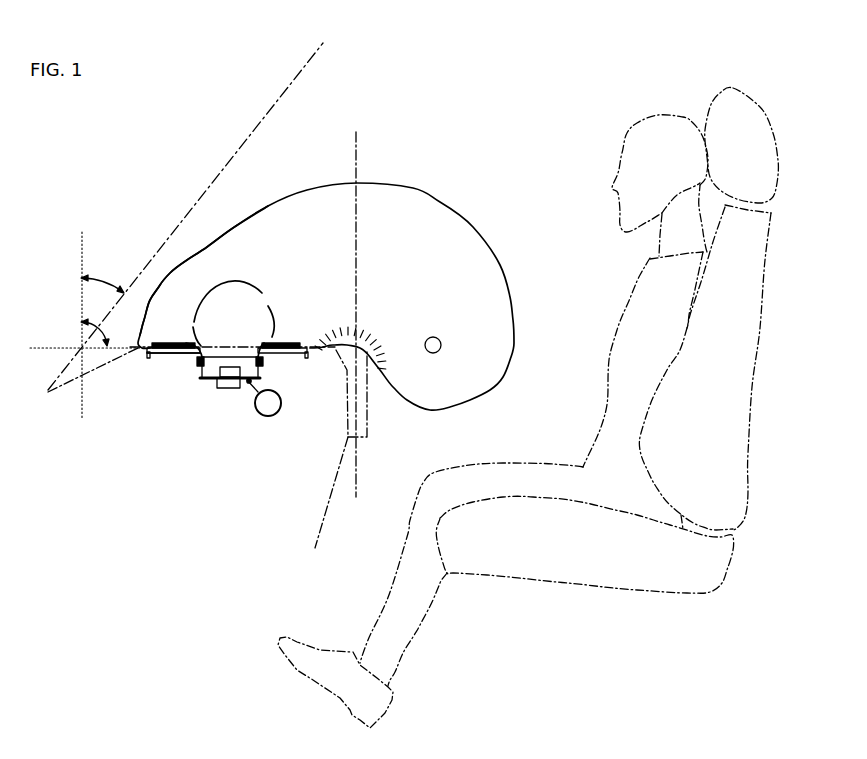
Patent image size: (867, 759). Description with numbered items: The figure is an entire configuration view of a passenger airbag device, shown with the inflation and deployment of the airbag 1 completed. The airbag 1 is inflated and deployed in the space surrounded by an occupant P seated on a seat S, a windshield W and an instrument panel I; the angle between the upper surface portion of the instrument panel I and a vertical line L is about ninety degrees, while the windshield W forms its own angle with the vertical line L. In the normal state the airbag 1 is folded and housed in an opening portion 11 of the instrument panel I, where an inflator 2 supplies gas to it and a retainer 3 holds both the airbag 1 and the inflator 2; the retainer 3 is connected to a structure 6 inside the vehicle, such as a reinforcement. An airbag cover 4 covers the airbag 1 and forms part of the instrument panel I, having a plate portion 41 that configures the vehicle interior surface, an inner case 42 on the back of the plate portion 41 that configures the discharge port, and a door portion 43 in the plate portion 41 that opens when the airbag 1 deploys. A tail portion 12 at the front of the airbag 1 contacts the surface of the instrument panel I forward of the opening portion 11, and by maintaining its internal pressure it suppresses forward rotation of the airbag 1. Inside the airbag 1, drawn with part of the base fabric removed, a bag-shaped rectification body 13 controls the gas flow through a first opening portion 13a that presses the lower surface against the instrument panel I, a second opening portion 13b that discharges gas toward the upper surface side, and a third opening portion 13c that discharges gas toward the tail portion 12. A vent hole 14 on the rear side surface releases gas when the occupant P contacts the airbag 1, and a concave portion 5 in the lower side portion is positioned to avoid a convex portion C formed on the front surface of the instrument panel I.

The airbag 1 is at (404, 186).
The inflator 2 is at (228, 389).
The retainer 3 is at (204, 380).
The airbag cover 4 is at (147, 369).
The concave portion 5 is at (376, 327).
The structure 6 is at (263, 417).
The opening portion 11 is at (232, 343).
The tail portion 12 is at (153, 284).
The rectification body 13 is at (266, 292).
The first opening portion 13a is at (270, 354).
The second opening portion 13b is at (272, 297).
The third opening portion 13c is at (188, 332).
The vent hole 14 is at (442, 344).
The plate portion 41 is at (164, 355).
The inner case 42 is at (196, 367).
The door portion 43 is at (168, 346).
The windshield W is at (239, 148).
The vertical line L is at (85, 313).
The center axis X is at (356, 312).
The instrument panel I is at (344, 380).
The convex portion C is at (368, 426).
The occupant P is at (656, 113).
The seat S is at (751, 390).